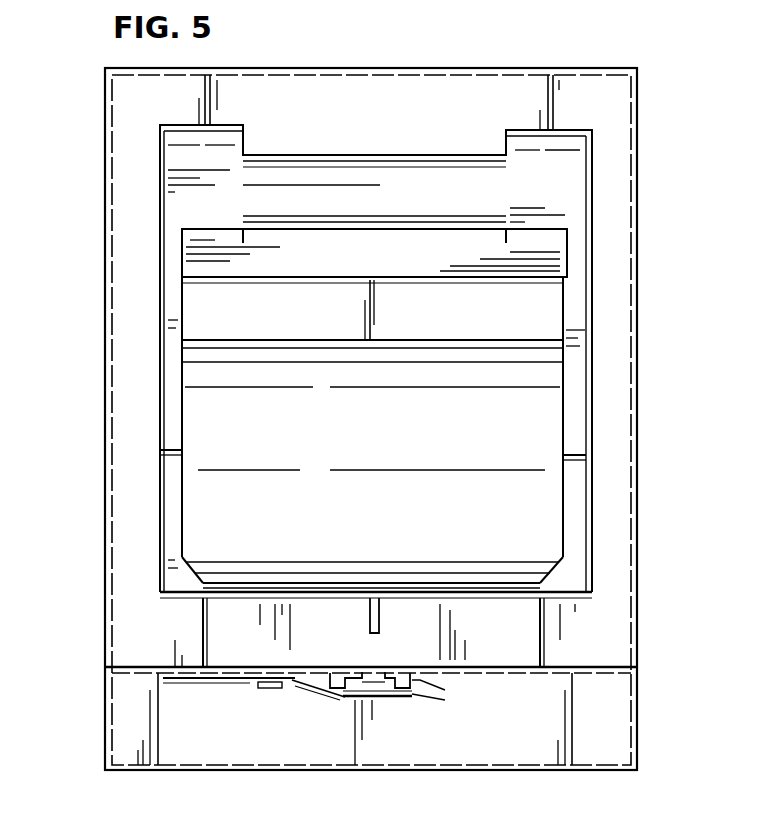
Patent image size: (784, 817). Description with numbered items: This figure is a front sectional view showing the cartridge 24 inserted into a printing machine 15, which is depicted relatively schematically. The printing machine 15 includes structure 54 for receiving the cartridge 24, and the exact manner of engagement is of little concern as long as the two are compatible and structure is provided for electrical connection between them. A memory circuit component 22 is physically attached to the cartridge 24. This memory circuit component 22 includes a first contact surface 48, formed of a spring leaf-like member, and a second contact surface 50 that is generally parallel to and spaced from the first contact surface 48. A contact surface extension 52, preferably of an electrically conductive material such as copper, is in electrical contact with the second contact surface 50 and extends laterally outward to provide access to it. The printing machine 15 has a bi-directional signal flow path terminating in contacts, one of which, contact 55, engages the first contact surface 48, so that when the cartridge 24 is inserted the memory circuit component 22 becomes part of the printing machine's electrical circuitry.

The printing machine 15 is at (371, 390).
The structure for receiving a cartridge 54 is at (435, 396).
The cartridge 24 is at (157, 484).
The first contact surface 48 is at (400, 635).
The contact surface extension 52 is at (361, 652).
The second contact surface 50 is at (366, 727).
The first contact surface of the printing machine 55 is at (254, 709).
The memory circuit component 22 is at (454, 707).